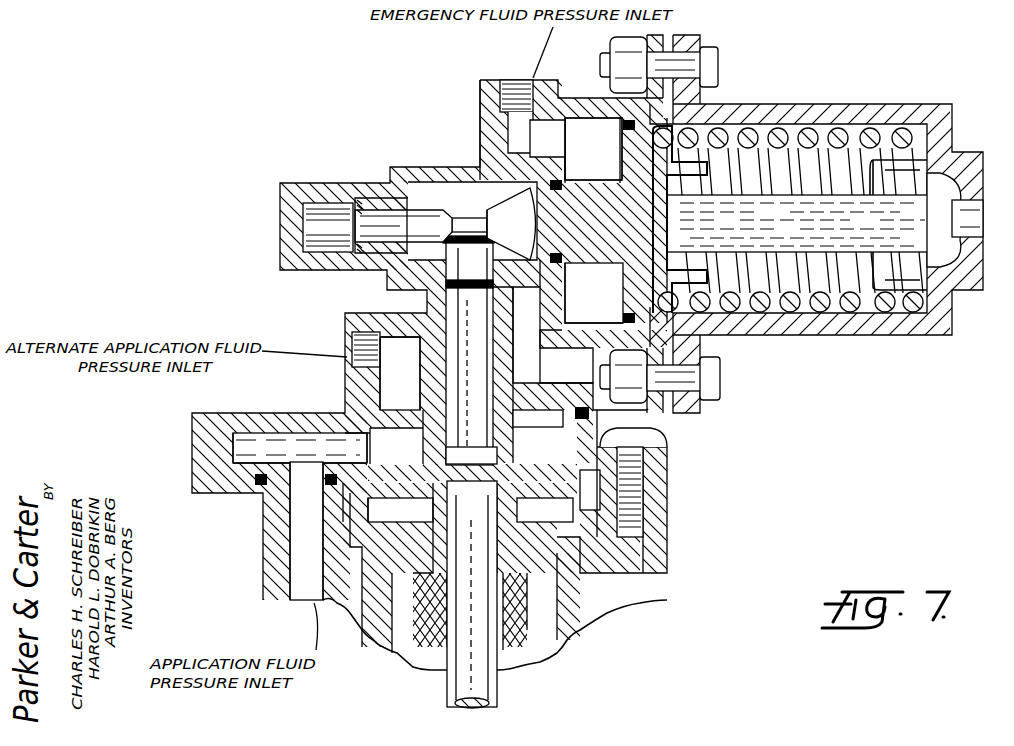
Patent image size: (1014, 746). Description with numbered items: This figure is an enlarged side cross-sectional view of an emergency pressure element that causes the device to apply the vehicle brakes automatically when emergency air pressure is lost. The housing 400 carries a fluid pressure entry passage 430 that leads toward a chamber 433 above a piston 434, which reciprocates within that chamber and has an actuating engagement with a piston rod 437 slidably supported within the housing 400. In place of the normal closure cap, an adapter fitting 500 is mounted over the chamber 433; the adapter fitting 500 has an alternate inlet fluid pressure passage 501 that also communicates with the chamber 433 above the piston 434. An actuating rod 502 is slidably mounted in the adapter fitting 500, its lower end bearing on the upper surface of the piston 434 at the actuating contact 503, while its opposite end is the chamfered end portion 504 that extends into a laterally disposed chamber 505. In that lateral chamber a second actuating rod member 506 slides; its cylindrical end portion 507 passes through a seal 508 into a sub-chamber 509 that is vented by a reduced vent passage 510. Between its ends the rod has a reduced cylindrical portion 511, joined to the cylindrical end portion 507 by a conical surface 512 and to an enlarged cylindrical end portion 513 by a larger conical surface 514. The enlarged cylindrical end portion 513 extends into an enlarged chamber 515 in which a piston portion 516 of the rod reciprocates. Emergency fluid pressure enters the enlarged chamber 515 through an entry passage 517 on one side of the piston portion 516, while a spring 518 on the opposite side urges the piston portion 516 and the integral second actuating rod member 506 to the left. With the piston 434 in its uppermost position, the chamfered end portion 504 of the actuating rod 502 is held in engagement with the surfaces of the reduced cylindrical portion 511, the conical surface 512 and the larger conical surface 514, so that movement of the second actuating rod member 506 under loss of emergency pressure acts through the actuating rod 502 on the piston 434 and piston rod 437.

The housing 400 is at (653, 553).
The fluid pressure entry passage 430 is at (307, 600).
The chamber 433 is at (587, 428).
The piston 434 is at (513, 463).
The piston rod 437 is at (487, 685).
The adapter fitting 500 is at (362, 311).
The alternate inlet fluid pressure passage 501 is at (347, 362).
The actuating rod 502 is at (457, 310).
The actuating contact 503 is at (447, 453).
The chamfered end portion 504 is at (457, 247).
The laterally disposed chamber 505 is at (438, 182).
The second actuating rod member 506 is at (382, 213).
The cylindrical end portion 507 is at (357, 237).
The seal 508 is at (367, 197).
The sub-chamber 509 is at (313, 207).
The reduced vent passage 510 is at (283, 232).
The reduced cylindrical portion 511 is at (480, 200).
The conical surface 512 is at (452, 167).
The enlarged cylindrical end portion 513 is at (612, 172).
The larger conical surface 514 is at (478, 150).
The enlarged chamber 515 is at (591, 98).
The piston portion 516 is at (625, 143).
The entry passage 517 is at (527, 80).
The spring 518 is at (810, 140).